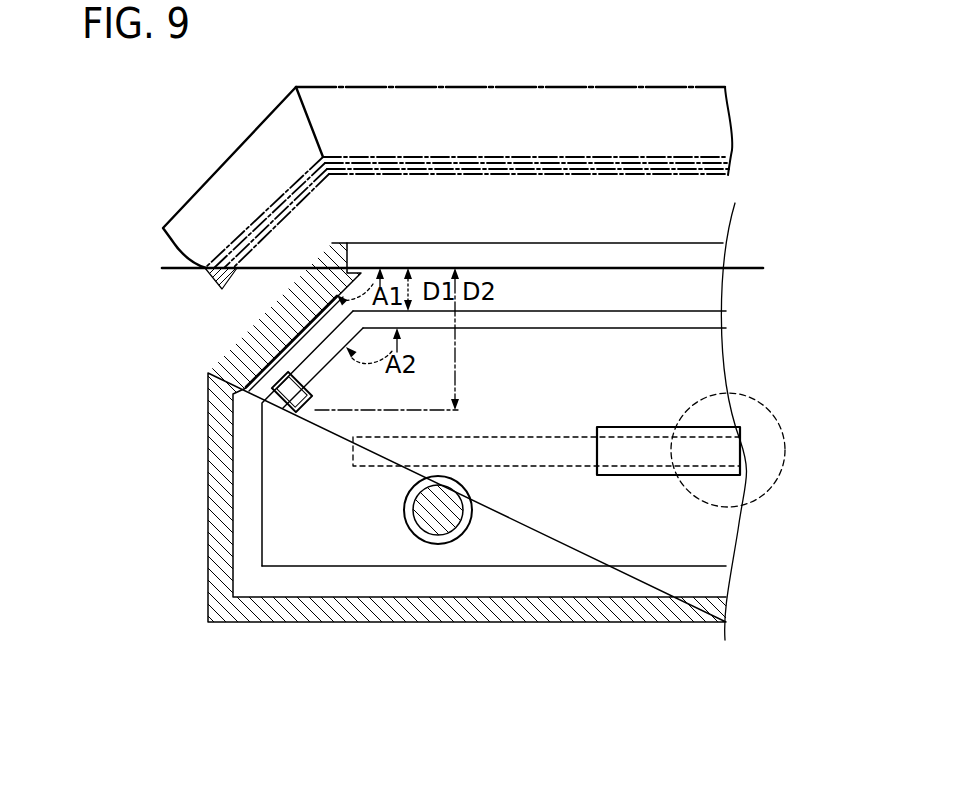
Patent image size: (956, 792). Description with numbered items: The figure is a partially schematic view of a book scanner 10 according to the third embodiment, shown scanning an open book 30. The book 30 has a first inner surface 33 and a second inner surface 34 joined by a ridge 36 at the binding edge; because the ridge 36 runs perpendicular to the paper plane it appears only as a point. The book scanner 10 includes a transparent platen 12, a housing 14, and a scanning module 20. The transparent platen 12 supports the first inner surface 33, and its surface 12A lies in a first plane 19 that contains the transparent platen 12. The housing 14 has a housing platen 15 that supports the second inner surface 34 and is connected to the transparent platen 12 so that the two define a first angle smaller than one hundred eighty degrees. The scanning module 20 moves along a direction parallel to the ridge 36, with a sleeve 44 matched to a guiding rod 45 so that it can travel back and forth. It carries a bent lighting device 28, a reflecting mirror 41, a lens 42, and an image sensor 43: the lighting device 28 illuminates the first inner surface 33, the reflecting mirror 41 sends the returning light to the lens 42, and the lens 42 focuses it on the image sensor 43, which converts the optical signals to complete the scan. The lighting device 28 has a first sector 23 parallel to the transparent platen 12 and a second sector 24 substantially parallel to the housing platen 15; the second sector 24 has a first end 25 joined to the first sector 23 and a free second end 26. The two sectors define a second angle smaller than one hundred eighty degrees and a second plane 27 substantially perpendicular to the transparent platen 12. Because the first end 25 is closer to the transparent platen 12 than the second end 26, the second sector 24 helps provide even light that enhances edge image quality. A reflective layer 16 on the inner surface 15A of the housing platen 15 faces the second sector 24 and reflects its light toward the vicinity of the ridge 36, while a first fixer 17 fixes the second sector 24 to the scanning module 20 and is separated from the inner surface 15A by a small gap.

The book scanner 10 is at (204, 449).
The transparent platen 12 is at (657, 253).
The rear surface of display panel 12A is at (592, 268).
The housing 14 is at (208, 560).
The housing platen 15 is at (237, 353).
The inner surface 15A is at (253, 398).
The reflective layer 16 is at (250, 340).
The first fixer 17 is at (302, 412).
The first plane 19 is at (165, 265).
The scanning module 20 is at (256, 516).
The first sector 23 is at (535, 326).
The second sector 24 is at (333, 366).
The first end 25 is at (288, 311).
The second end 26 is at (283, 410).
The second plane 27 is at (580, 566).
The lighting device 28 is at (694, 306).
The book 30 is at (227, 150).
The first inner surface 33 is at (489, 177).
The second inner surface 34 is at (287, 222).
The ridge 36 is at (332, 177).
The reflecting mirror 41 is at (543, 467).
The lens 42 is at (715, 507).
The image sensor 43 is at (652, 475).
The sleeve 44 is at (420, 535).
The guiding rod 45 is at (445, 520).